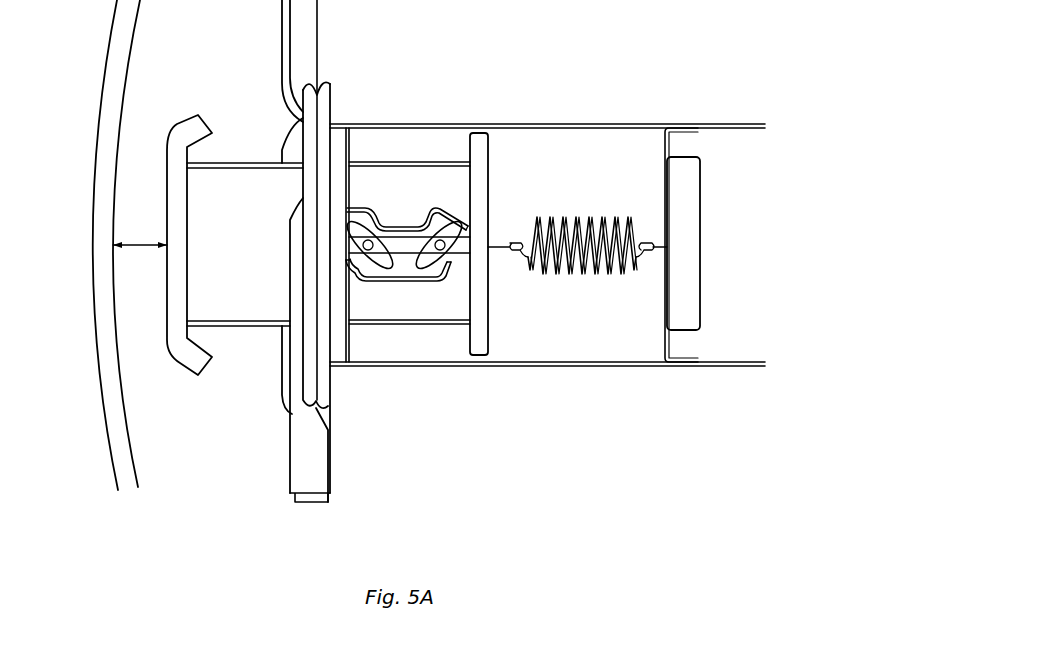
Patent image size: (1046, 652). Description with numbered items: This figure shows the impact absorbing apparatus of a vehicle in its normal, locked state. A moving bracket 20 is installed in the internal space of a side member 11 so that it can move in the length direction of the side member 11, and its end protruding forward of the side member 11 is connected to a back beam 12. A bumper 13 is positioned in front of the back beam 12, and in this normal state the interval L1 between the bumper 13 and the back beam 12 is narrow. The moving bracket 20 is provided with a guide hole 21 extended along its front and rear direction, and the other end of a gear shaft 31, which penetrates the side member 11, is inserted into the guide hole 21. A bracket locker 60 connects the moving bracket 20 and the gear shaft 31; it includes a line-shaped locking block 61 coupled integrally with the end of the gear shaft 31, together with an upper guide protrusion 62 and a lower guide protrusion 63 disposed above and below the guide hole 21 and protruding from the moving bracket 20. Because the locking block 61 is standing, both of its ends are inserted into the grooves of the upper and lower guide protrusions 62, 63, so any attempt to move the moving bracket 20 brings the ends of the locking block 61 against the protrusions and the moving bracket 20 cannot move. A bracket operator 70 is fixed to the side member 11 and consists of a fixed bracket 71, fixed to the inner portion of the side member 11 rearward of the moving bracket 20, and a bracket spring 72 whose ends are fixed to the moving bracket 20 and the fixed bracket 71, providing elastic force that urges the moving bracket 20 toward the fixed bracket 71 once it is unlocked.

The side member 11 is at (620, 124).
The back beam 12 is at (183, 130).
The bumper 13 is at (105, 97).
The moving bracket 20 is at (260, 165).
The guide hole 21 is at (403, 243).
The gear shaft 31 is at (372, 274).
The bracket locker 60 is at (458, 249).
The locking block 61 is at (390, 284).
The upper guide protrusion 62 is at (447, 210).
The lower guide protrusion 63 is at (415, 280).
The bracket operator 70 is at (714, 251).
The fixed bracket 71 is at (683, 320).
The bracket spring 72 is at (548, 217).
The interval L1 is at (140, 228).